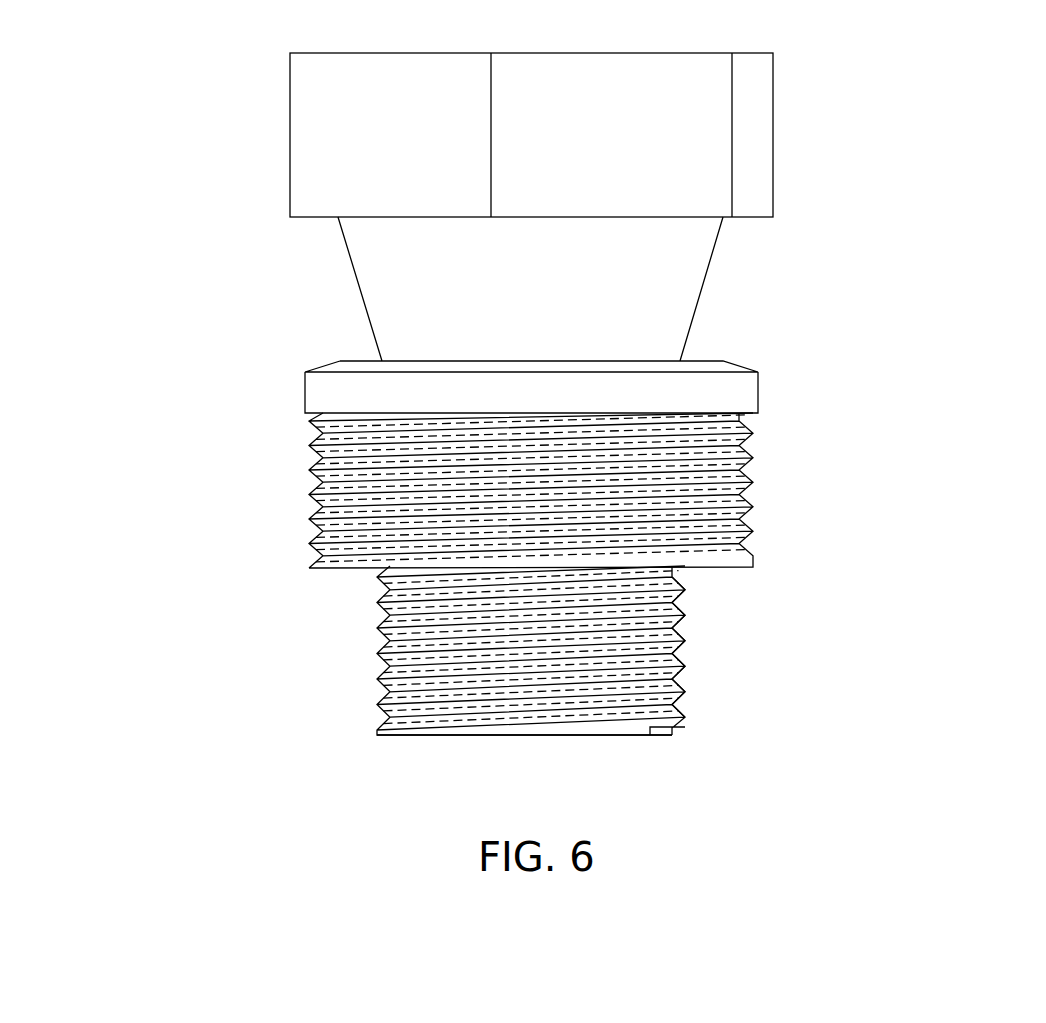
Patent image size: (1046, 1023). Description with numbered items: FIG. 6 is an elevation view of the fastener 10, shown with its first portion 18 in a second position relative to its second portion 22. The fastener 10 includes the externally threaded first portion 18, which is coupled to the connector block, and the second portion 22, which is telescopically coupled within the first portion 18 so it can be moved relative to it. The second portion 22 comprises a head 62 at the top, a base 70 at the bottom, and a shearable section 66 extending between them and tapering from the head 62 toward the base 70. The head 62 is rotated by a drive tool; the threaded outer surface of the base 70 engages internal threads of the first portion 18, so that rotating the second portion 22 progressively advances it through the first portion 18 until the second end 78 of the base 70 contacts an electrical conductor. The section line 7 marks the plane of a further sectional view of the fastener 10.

The section line 7- 7 is at (160, 135).
The fastener 10 is at (148, 408).
The first portion 18 is at (718, 494).
The second portion 22 is at (397, 671).
The head 62 is at (594, 90).
The shearable section 66 is at (645, 274).
The base 70 is at (655, 655).
The second end 78 is at (527, 736).